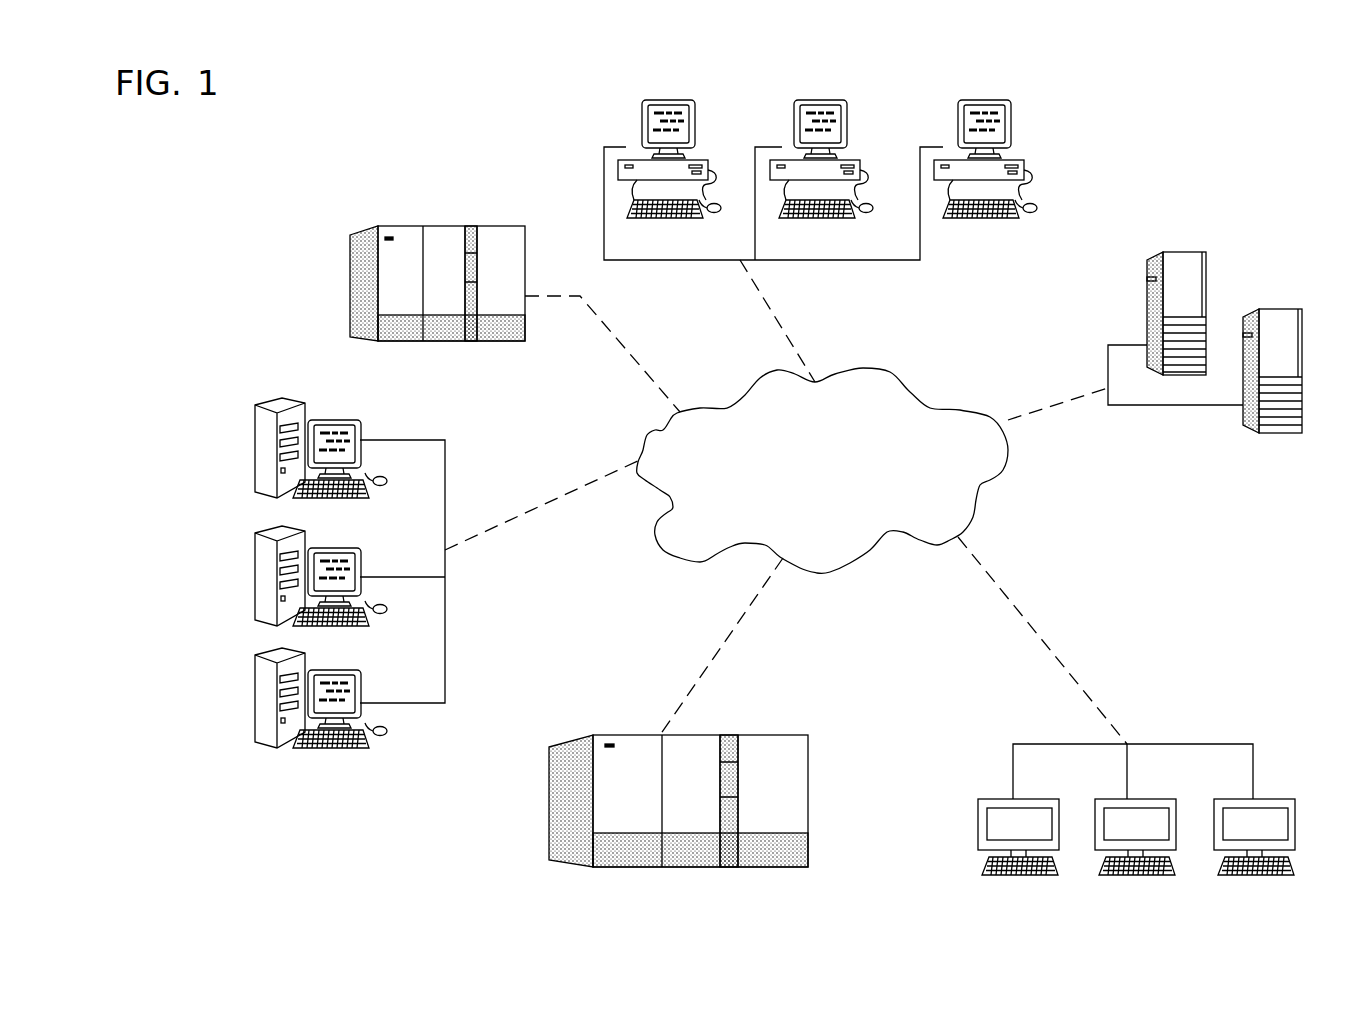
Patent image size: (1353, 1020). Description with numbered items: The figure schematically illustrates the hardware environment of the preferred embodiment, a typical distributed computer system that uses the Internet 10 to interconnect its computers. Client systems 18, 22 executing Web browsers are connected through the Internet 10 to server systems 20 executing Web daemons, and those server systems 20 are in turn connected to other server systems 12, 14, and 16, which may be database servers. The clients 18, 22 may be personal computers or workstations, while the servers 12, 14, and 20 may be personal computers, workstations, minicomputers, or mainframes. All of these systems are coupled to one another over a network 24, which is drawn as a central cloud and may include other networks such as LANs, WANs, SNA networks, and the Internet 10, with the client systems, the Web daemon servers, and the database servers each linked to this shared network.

The Internet 10 is at (474, 173).
The server system 12 is at (348, 258).
The server system 14 is at (1222, 265).
The server system 16 is at (770, 733).
The client system 18 is at (1077, 878).
The server system 20 is at (382, 636).
The client system 22 is at (817, 238).
The network 24 is at (880, 535).